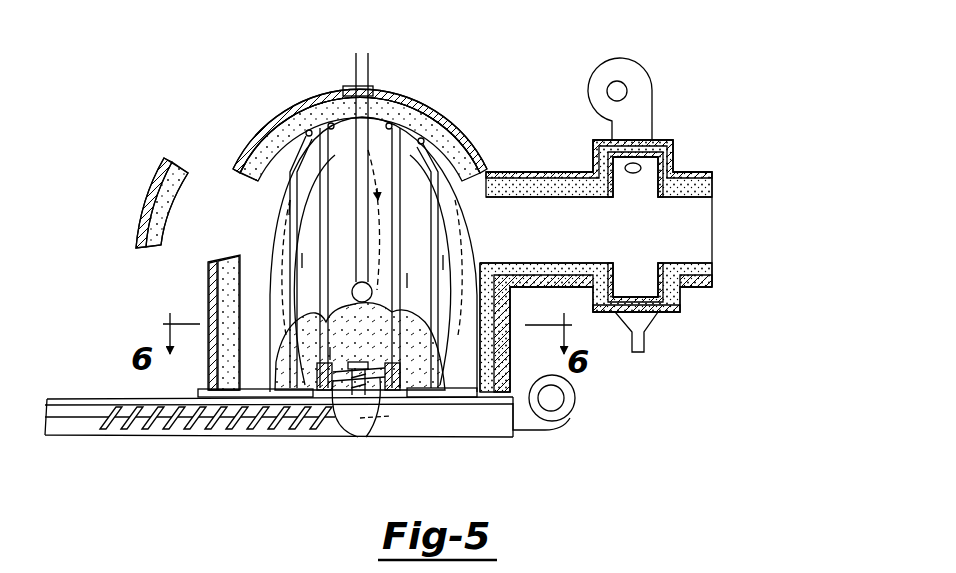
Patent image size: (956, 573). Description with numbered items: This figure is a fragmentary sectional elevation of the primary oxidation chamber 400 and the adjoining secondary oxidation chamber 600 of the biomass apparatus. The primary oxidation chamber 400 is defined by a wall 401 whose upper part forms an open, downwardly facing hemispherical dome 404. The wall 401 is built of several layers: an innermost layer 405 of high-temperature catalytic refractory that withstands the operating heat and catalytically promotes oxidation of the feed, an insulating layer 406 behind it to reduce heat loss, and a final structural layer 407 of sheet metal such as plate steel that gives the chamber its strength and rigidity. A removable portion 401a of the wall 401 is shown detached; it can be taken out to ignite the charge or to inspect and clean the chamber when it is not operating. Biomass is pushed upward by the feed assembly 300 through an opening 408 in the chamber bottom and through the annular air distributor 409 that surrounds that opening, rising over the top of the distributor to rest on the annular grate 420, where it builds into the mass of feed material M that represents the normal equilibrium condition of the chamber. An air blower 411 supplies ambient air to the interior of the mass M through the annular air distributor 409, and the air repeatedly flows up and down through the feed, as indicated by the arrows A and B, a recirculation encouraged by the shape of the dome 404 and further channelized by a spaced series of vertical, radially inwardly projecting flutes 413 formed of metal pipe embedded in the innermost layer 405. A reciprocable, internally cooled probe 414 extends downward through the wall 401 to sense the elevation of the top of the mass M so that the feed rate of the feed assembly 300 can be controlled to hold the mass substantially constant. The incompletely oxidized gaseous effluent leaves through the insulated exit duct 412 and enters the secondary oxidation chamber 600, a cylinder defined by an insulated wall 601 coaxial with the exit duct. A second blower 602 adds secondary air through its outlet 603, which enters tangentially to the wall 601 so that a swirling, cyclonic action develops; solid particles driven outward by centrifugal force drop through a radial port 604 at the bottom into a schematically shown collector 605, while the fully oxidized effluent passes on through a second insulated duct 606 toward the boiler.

The feed assembly 300 is at (206, 444).
The primary oxidation chamber 400 is at (492, 10).
The wall 401 is at (378, 6).
The removable portion of the wall 401a is at (143, 192).
The hemispherical dome 404 is at (433, 110).
The innermost layer 405 is at (375, 113).
The insulating layer 406 is at (287, 118).
The structural layer 407 is at (258, 130).
The opening 408 is at (398, 378).
The annular air distributor 409 is at (421, 380).
The air blower 411 is at (556, 423).
The insulated exit duct 412 is at (583, 172).
The flutes 413 is at (395, 150).
The reciprocable probe 414 is at (363, 58).
The annular grate 420 is at (458, 388).
The secondary oxidation chamber 600 is at (735, 127).
The insulated wall 601 is at (673, 140).
The second blower 602 is at (590, 73).
The blower outlet 603 is at (641, 166).
The radial port 604 is at (681, 305).
The collector 605 is at (646, 336).
The second insulated duct 606 is at (705, 172).
The arrow A is at (430, 300).
The arrow B is at (265, 281).
The mass of feed material M is at (300, 307).